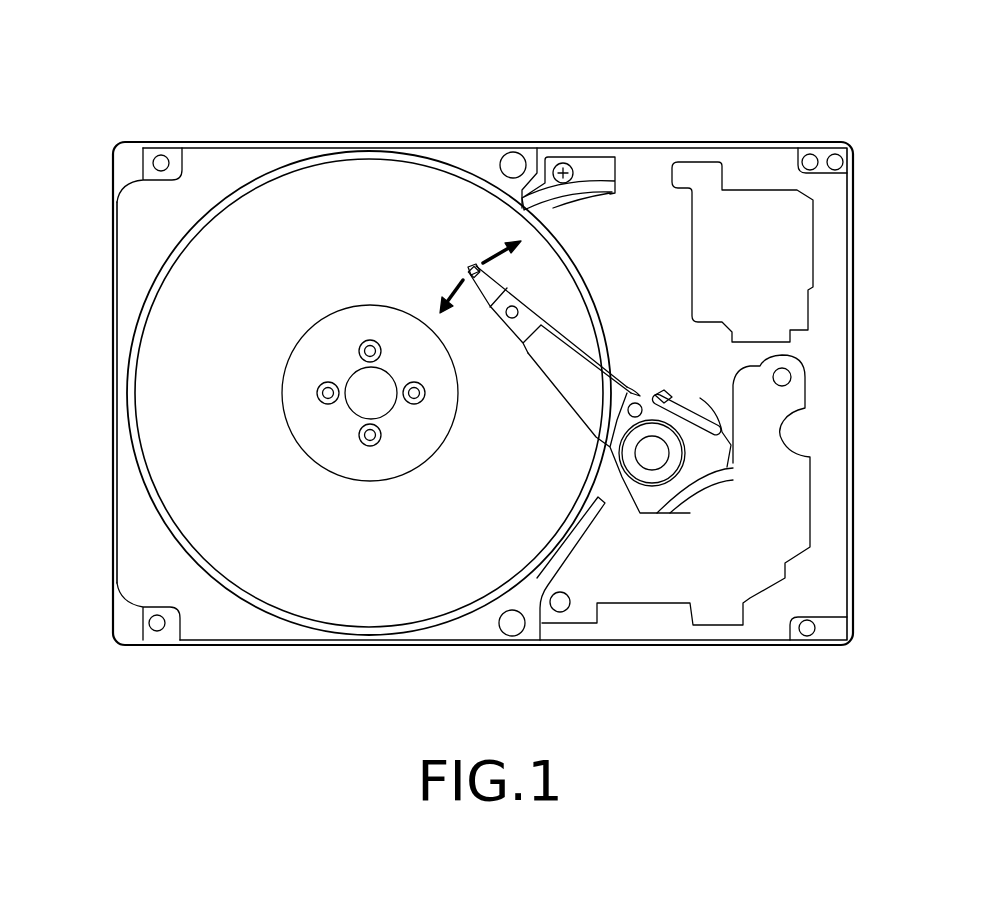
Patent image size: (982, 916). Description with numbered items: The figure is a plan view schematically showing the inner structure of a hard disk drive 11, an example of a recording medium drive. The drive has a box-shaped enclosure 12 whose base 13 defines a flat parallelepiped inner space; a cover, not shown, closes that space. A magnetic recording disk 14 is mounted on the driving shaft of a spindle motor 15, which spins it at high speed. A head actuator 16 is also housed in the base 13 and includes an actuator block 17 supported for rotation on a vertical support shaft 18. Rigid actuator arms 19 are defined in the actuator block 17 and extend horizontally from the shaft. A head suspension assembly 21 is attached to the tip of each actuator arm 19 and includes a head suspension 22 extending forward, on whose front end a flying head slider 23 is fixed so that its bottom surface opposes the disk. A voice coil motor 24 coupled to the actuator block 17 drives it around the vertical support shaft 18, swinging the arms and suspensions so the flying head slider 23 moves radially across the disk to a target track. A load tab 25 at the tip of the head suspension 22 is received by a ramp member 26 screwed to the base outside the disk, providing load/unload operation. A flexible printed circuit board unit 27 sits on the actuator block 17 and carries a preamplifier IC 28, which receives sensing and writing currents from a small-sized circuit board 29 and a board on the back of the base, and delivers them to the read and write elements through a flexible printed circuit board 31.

The hard disk drive 11 is at (275, 122).
The enclosure 12 is at (656, 140).
The base 13 is at (116, 228).
The magnetic recording disk 14 is at (141, 312).
The spindle motor 15 is at (366, 401).
The head actuator 16 is at (575, 418).
The actuator block 17 is at (623, 494).
The vertical support shaft 18 is at (684, 470).
The actuator arm 19 is at (556, 394).
The head suspension assembly 21 is at (462, 252).
The head suspension 22 is at (490, 276).
The flying head slider 23 is at (466, 270).
The voice coil motor 24 is at (813, 511).
The load tab 25 is at (490, 231).
The ramp member 26 is at (572, 158).
The flexible printed circuit board unit 27 is at (668, 389).
The preamplifier IC 28 is at (682, 405).
The small-sized circuit board 29 is at (692, 258).
The flexible printed circuit board 31 is at (583, 342).